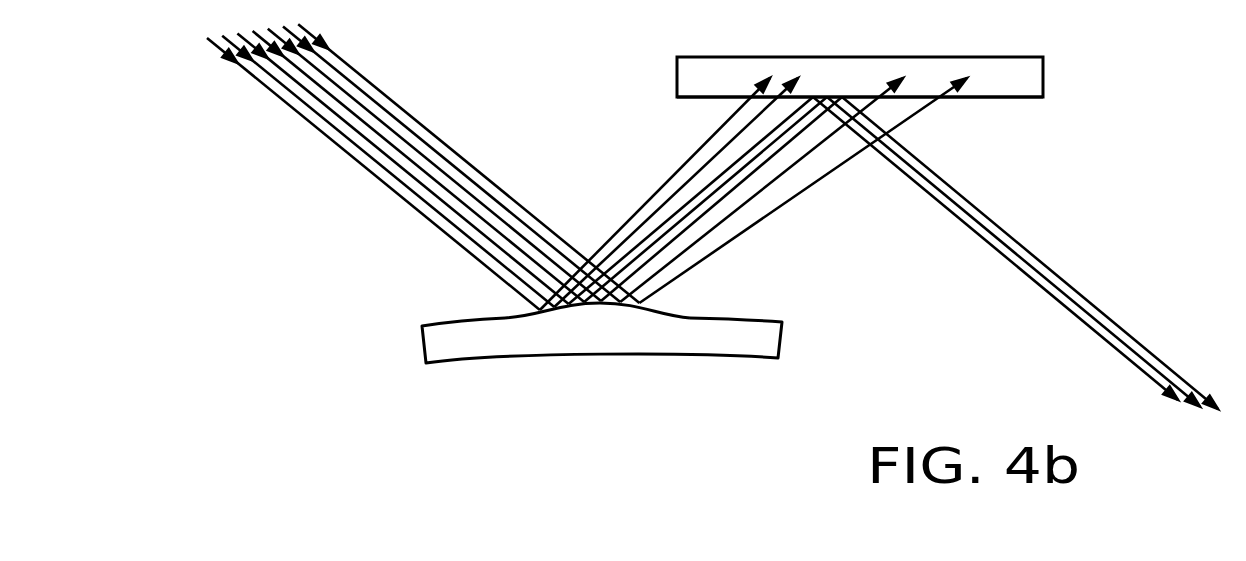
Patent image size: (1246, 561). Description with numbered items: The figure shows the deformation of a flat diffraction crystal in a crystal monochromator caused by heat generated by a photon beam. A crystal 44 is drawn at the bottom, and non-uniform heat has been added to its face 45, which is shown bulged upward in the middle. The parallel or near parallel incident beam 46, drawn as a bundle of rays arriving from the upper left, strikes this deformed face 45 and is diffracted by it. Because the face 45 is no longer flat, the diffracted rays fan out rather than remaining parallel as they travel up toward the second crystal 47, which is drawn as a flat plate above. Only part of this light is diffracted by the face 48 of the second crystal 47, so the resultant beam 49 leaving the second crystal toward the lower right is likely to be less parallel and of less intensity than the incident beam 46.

The crystal 44 is at (422, 345).
The face of the crystal 45 is at (503, 320).
The incident beam 46 is at (385, 100).
The second crystal 47 is at (677, 75).
The face of the second crystal 48 is at (707, 100).
The resultant beam 49 is at (1032, 278).